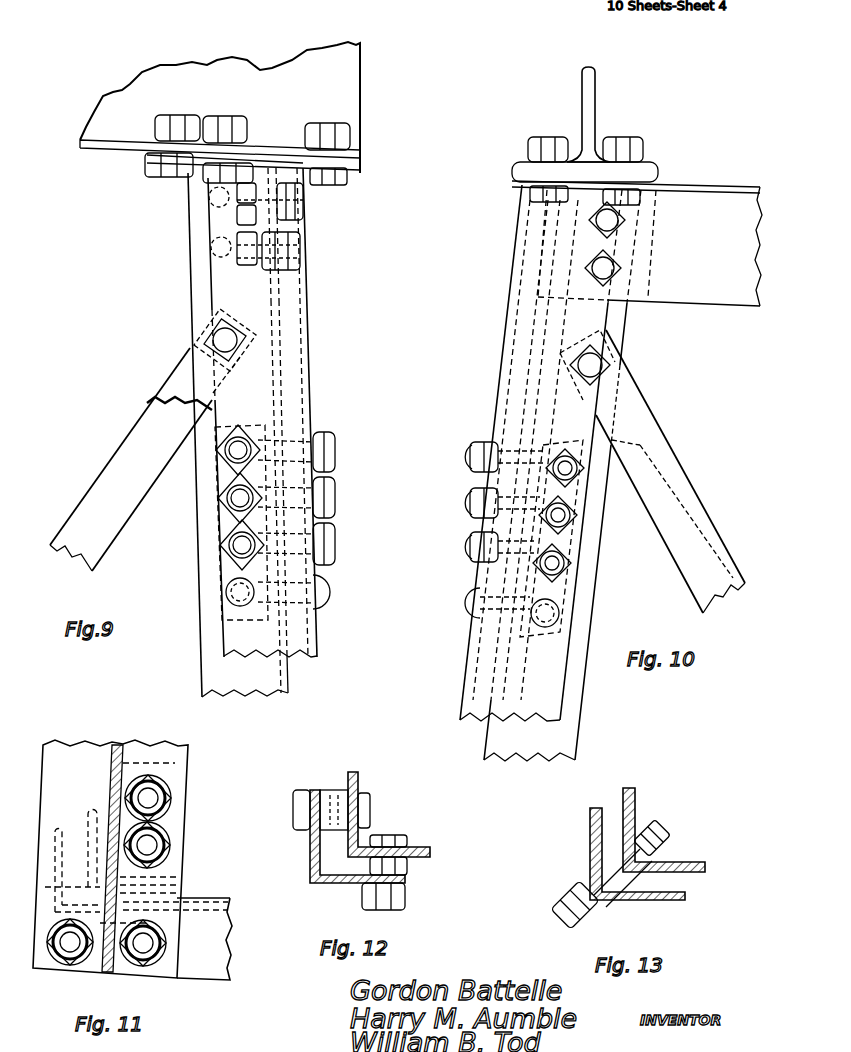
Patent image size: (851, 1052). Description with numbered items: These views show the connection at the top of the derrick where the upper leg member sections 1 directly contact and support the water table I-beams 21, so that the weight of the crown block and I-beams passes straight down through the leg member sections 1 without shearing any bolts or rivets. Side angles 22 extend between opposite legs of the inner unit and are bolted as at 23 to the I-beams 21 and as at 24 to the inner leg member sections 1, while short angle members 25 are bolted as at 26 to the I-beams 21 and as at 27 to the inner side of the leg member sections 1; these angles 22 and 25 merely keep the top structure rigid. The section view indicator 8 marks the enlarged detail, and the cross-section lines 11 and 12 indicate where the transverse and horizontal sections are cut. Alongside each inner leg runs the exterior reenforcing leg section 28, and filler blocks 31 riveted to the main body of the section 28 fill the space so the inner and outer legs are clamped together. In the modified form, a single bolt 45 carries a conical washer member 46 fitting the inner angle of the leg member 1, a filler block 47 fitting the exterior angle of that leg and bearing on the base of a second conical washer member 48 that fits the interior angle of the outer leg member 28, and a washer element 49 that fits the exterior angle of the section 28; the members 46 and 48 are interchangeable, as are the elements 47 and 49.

In FIG. 9, the leg member section 1 is at (273, 677).
In FIG. 10, the leg member section 1 is at (495, 745).
In FIG. 11, the leg member section 1 is at (88, 810).
In FIG. 12, the leg member section 1 is at (357, 781).
In FIG. 9, the section view indicator 8 is at (125, 0).
In FIG. 10, the section line 11— 11 is at (680, 96).
In FIG. 10, the section line 12— 12 is at (690, 452).
In FIG. 9, the I-beam 21 is at (323, 108).
In FIG. 10, the I-beam 21 is at (598, 80).
In FIG. 9, the side angle 22 is at (277, 228).
In FIG. 10, the side angle 22 is at (722, 218).
In FIG. 11, the side angle 22 is at (210, 905).
In FIG. 9, the bolt 23 is at (340, 138).
In FIG. 10, the bolt 23 is at (585, 171).
In FIG. 11, the bolt 23 is at (155, 955).
In FIG. 9, the bolt 24 is at (297, 260).
In FIG. 9, the short angle member 25 is at (155, 157).
In FIG. 10, the short angle member 25 is at (647, 218).
In FIG. 11, the short angle member 25 is at (160, 875).
In FIG. 9, the bolt 26 is at (180, 167).
In FIG. 11, the bolt 26 is at (170, 795).
In FIG. 9, the bolt 27 is at (242, 263).
In FIG. 9, the exterior leg member section 28 is at (307, 358).
In FIG. 10, the exterior leg member section 28 is at (507, 350).
In FIG. 11, the exterior leg member section 28 is at (55, 855).
In FIG. 12, the exterior leg member section 28 is at (310, 868).
In FIG. 9, the filler block 31 is at (297, 570).
In FIG. 10, the filler block 31 is at (492, 578).
In FIG. 12, the filler block 31 is at (333, 790).
In FIG. 13, the bolt 45 is at (657, 835).
In FIG. 13, the conical washer member 46 is at (635, 827).
In FIG. 10, the filler block 47 is at (652, 471).
In FIG. 13, the filler block 47 is at (612, 843).
In FIG. 13, the conical washer member 48 is at (633, 890).
In FIG. 13, the washer element 49 is at (585, 872).